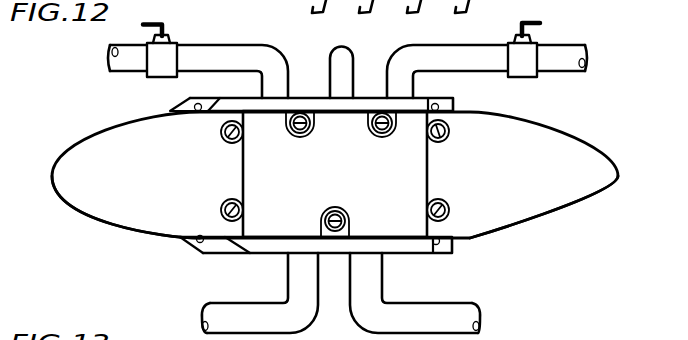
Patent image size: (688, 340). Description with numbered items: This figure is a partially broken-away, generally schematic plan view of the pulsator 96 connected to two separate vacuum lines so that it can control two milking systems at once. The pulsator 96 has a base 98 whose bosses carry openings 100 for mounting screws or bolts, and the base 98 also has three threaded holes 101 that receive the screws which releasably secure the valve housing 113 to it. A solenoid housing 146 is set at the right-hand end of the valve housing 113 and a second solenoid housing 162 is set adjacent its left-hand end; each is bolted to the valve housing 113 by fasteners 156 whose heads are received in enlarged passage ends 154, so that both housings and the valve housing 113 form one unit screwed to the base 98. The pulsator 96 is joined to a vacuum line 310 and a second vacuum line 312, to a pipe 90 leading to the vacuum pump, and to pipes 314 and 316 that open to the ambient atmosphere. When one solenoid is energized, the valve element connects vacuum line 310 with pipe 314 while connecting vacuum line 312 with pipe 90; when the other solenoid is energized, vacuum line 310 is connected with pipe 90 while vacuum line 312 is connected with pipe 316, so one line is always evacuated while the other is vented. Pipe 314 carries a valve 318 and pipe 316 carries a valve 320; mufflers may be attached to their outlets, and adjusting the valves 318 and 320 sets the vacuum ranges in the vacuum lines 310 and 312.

The pipe 90 is at (347, 63).
The pulsator 96 is at (582, 145).
The base 98 is at (402, 247).
The openings 100 is at (190, 100).
The threaded holes 101 is at (377, 133).
The valve housing 113 is at (299, 198).
The solenoid housing 146 is at (563, 208).
The enlarged upper ends of passages 154 is at (222, 137).
The fasteners 156 is at (230, 202).
The solenoid housing 162 is at (100, 213).
The vacuum line 310 is at (220, 303).
The second vacuum line 312 is at (472, 307).
The pipe 314 is at (252, 54).
The pipe 316 is at (492, 65).
The valve 318 is at (172, 41).
The valve 320 is at (527, 45).